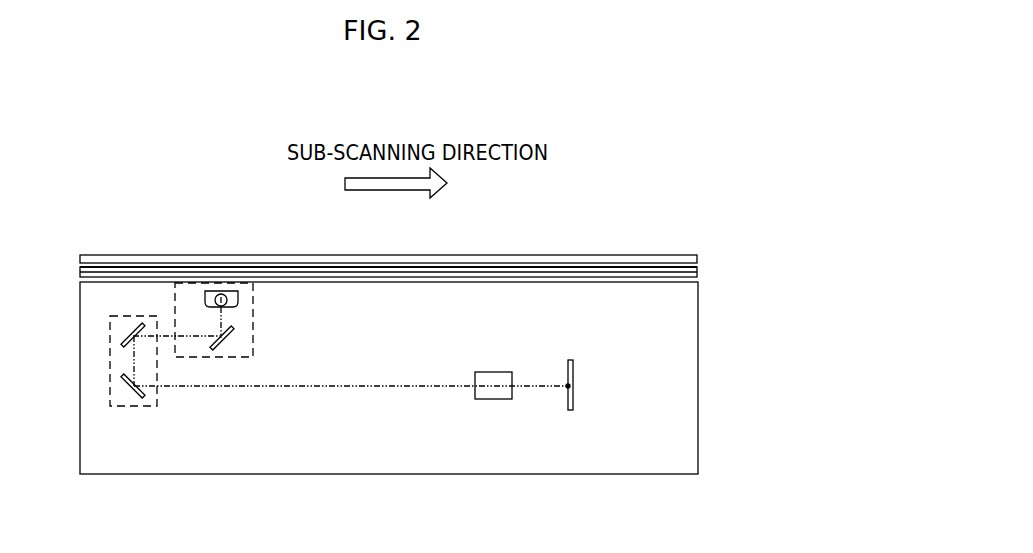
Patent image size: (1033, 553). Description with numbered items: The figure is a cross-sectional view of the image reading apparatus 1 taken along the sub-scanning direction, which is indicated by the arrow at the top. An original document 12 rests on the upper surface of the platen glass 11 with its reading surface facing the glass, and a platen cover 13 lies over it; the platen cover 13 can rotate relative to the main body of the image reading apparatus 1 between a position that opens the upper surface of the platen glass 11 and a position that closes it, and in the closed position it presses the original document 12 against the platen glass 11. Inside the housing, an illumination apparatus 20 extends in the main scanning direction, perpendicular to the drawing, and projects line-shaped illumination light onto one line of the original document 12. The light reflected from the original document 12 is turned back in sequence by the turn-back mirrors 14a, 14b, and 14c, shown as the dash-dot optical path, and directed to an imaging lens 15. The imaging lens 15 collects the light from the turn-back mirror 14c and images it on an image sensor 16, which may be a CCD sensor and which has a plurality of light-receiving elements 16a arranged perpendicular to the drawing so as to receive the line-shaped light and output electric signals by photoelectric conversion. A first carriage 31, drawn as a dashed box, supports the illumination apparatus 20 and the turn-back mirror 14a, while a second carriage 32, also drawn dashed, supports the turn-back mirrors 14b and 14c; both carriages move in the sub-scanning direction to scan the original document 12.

The image reading apparatus 1 is at (360, 479).
The platen glass 11 is at (632, 273).
The original document 12 is at (697, 265).
The platen cover 13 is at (515, 257).
The turn-back mirror 14a is at (233, 337).
The turn-back mirror 14b is at (135, 328).
The turn-back mirror 14c is at (125, 382).
The imaging lens 15 is at (493, 399).
The image sensor 16 is at (574, 390).
The light-receiving elements 16a is at (566, 383).
The illumination apparatus 20 is at (238, 297).
The first carriage 31 is at (173, 302).
The second carriage 32 is at (135, 405).